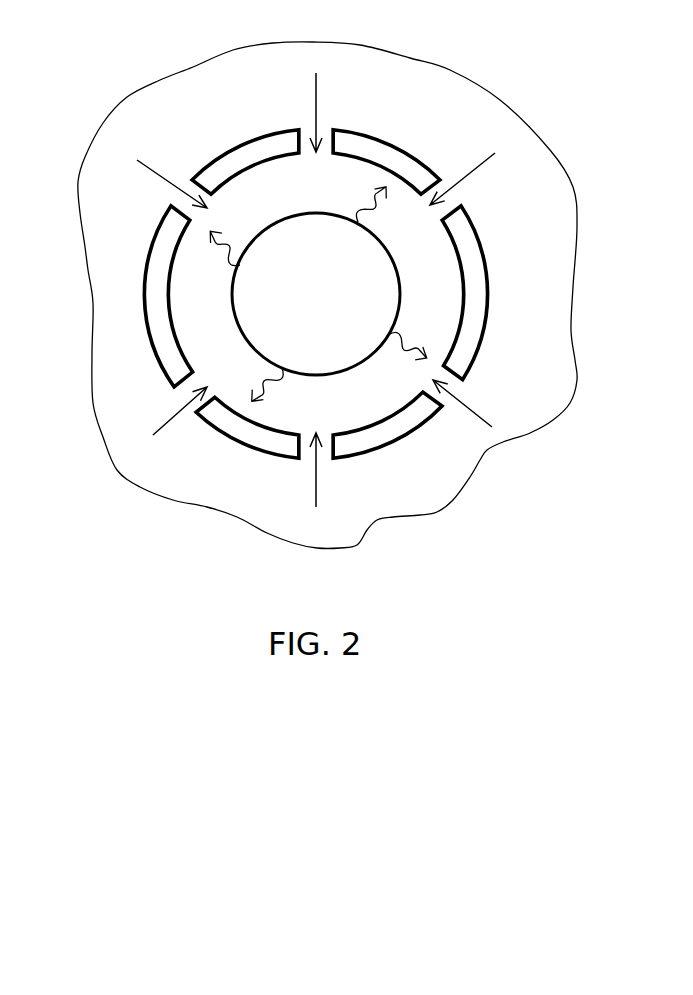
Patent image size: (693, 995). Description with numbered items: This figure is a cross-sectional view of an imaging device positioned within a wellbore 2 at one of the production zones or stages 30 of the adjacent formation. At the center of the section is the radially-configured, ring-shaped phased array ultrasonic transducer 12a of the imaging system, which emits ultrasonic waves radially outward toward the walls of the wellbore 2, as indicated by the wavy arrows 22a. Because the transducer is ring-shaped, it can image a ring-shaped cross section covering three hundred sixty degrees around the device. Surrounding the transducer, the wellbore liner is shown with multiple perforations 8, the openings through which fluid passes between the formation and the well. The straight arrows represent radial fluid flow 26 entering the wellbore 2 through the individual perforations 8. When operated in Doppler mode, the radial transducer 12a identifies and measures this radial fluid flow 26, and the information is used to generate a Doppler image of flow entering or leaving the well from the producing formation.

The wellbore 2 is at (367, 457).
The perforations 8 is at (335, 319).
The ring-shaped phased array ultrasonic transducer 12a is at (398, 273).
The arrows 22a is at (400, 343).
The radial fluid flow 26 is at (463, 410).
The production zones or stages 30 is at (246, 120).